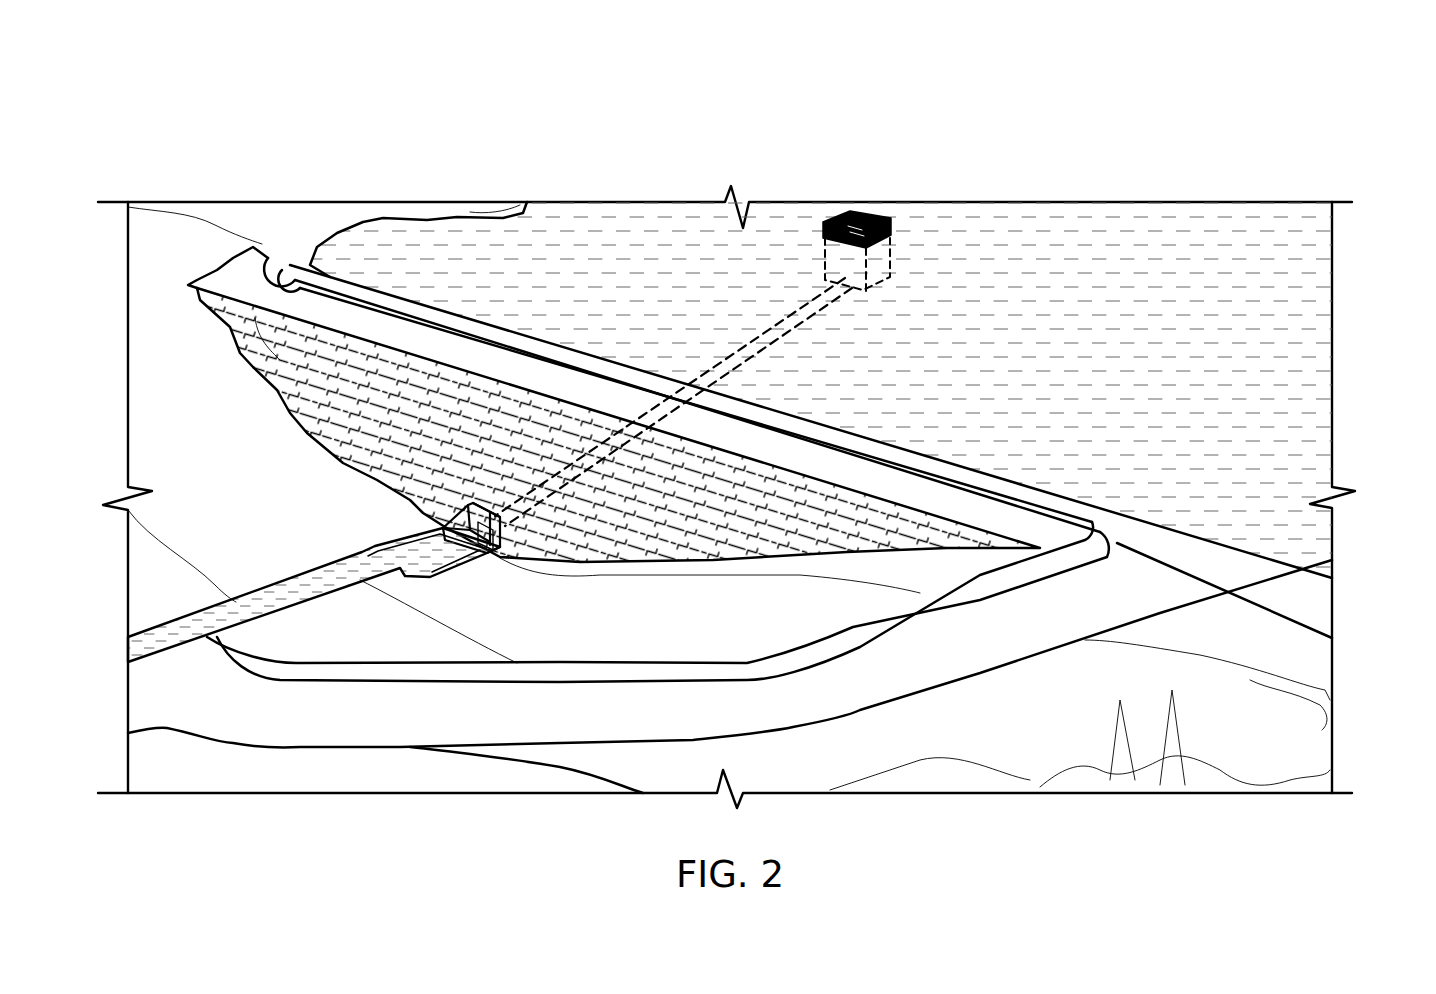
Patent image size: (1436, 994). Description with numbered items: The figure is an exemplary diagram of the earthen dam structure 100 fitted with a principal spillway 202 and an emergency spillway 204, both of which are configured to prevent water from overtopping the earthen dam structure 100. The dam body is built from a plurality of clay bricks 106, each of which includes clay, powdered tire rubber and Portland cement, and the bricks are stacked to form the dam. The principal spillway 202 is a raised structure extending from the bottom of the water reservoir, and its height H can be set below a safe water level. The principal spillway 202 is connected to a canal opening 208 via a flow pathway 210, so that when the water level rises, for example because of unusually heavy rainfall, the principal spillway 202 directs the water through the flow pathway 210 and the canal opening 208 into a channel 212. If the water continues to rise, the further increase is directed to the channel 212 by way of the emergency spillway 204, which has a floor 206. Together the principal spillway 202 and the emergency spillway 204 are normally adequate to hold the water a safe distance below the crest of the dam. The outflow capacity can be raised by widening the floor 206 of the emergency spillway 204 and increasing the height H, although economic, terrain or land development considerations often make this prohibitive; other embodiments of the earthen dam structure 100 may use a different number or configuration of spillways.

The earthen dam structure 100 is at (168, 138).
The clay brick 106 is at (262, 334).
The principal spillway 202 is at (812, 256).
The height H is at (870, 213).
The emergency spillway 204 is at (1107, 607).
The floor 206 is at (1223, 572).
The canal opening 208 is at (452, 522).
The flow pathway 210 is at (592, 447).
The channel 212 is at (158, 636).